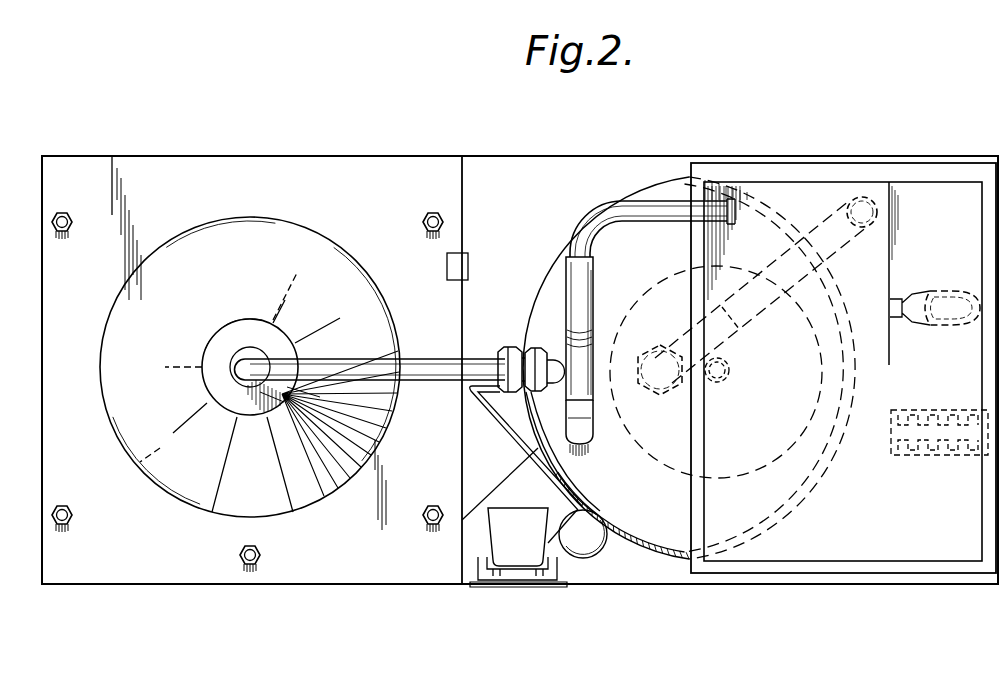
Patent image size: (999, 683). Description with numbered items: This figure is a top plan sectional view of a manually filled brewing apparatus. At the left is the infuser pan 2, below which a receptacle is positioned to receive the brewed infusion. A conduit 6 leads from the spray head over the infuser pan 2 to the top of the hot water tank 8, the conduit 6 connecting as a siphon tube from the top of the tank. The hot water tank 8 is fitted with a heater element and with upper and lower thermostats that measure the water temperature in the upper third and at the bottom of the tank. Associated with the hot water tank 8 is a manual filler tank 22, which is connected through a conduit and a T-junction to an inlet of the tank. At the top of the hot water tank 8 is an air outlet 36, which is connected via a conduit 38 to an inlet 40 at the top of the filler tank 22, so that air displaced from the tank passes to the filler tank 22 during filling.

The infuser pan 2 is at (330, 260).
The conduit 6 is at (348, 360).
The hot water tank 8 is at (668, 556).
The manual filler tank 22 is at (935, 195).
The air outlet 36 is at (593, 450).
The conduit 38 is at (572, 302).
The inlet 40 is at (730, 216).